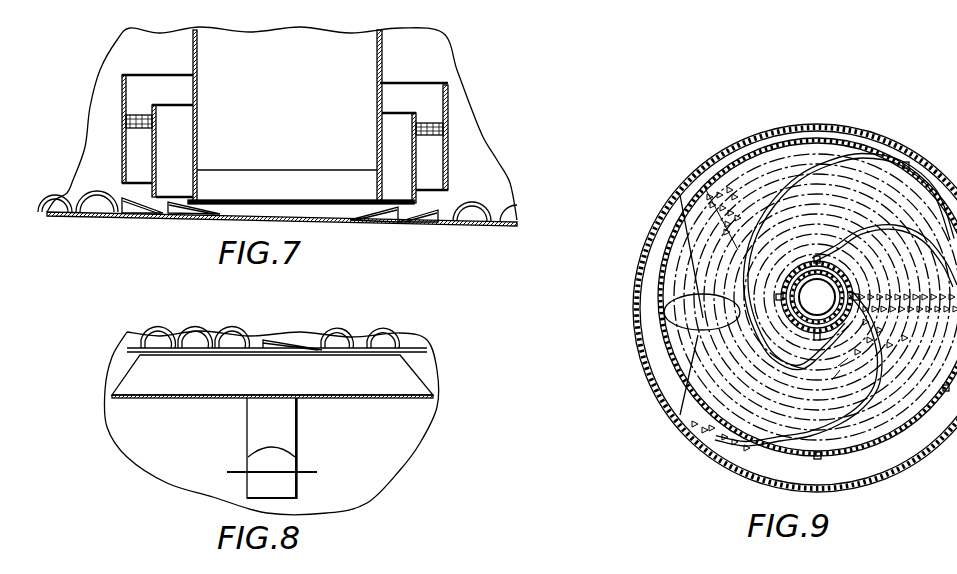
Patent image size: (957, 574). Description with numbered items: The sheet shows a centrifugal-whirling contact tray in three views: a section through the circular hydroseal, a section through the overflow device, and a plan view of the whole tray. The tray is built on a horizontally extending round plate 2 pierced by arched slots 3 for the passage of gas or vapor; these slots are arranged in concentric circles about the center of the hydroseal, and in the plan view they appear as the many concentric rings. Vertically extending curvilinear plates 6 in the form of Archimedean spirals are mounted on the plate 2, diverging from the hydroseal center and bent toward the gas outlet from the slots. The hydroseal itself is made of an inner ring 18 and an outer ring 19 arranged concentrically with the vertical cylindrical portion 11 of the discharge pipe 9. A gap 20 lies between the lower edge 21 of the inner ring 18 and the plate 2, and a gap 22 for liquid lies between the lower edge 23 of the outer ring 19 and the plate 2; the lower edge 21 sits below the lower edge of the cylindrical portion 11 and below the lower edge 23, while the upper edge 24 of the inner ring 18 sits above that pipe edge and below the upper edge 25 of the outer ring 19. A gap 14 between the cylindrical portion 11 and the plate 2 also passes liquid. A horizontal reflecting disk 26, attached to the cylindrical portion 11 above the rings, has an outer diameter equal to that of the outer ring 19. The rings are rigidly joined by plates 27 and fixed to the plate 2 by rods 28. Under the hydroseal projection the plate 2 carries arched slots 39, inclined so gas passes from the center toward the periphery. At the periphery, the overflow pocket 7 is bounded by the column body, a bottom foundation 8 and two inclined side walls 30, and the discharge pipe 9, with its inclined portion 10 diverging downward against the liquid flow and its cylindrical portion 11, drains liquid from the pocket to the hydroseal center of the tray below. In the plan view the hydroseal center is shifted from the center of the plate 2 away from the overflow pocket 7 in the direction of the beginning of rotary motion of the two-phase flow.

In FIG. 7, the round plate 2 is at (503, 213).
In FIG. 8, the round plate 2 is at (425, 353).
In FIG. 9, the round plate 2 is at (920, 163).
In FIG. 7, the arched slots 3 is at (63, 192).
In FIG. 9, the curvilinear plates 6 is at (870, 163).
In FIG. 9, the overflow pocket 7 is at (658, 285).
In FIG. 8, the bottom foundation 8 is at (412, 400).
In FIG. 8, the discharge pipe 9 is at (237, 436).
In FIG. 8, the inclined portion 10 is at (291, 427).
In FIG. 7, the cylindrical portion 11 is at (383, 56).
In FIG. 8, the cylindrical portion 11 is at (291, 491).
In FIG. 7, the gap 14 is at (255, 177).
In FIG. 7, the inner ring 18 is at (417, 157).
In FIG. 7, the outer ring 19 is at (452, 88).
In FIG. 7, the gap 20 is at (438, 207).
In FIG. 7, the lower edge 21 is at (122, 196).
In FIG. 7, the gap 22 is at (63, 175).
In FIG. 7, the lower edge 23 is at (120, 180).
In FIG. 7, the upper edge 24 is at (152, 108).
In FIG. 7, the upper edge 25 is at (125, 75).
In FIG. 8, the reflecting disk 26 is at (307, 472).
In FIG. 7, the plates 27 is at (428, 127).
In FIG. 7, the rods 28 is at (193, 200).
In FIG. 8, the inclined side walls 30 is at (381, 392).
In FIG. 9, the inclined side walls 30 is at (697, 352).
In FIG. 7, the arched slots 39 is at (183, 202).